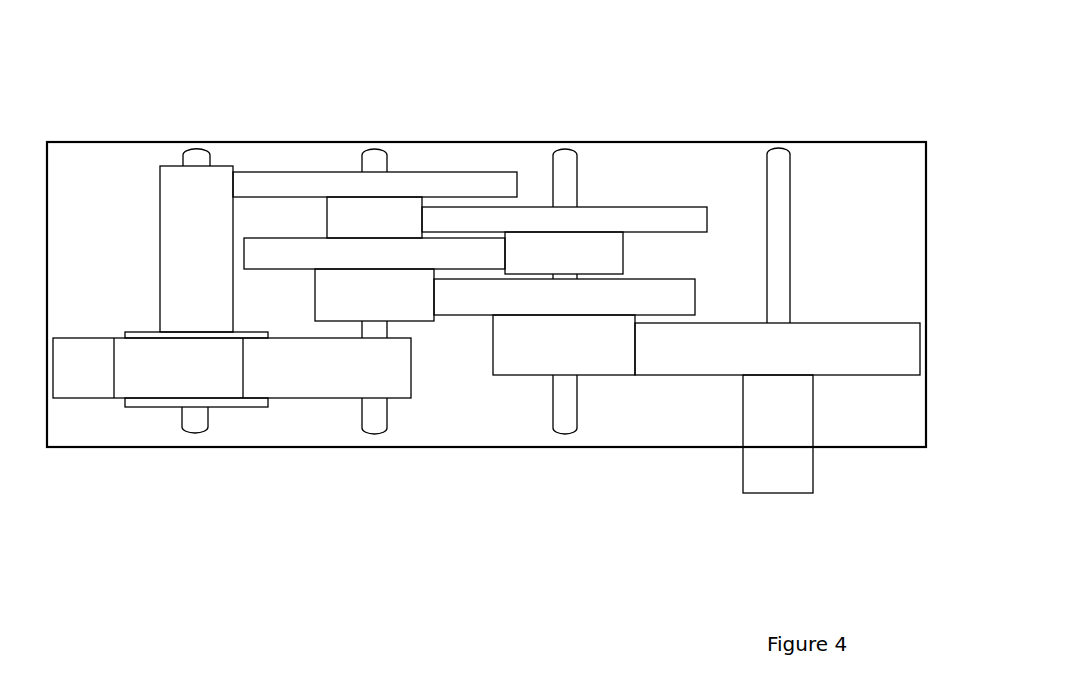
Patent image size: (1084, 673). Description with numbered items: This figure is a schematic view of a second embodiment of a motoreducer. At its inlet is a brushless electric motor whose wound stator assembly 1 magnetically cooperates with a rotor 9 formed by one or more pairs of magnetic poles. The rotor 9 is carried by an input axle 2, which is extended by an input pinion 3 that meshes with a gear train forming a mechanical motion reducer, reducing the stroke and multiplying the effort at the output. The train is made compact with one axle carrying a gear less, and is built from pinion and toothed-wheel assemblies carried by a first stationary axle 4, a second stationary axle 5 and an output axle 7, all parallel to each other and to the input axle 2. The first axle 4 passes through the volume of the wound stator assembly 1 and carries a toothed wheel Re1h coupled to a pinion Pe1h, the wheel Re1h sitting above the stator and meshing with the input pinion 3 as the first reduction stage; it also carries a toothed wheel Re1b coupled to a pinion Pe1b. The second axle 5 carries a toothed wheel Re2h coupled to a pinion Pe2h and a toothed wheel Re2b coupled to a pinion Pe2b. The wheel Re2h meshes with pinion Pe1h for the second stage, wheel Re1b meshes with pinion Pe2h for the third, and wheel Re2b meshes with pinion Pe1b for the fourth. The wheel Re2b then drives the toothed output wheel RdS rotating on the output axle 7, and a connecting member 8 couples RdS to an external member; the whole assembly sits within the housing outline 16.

The wound stator assembly 1 is at (88, 373).
The input axle 2 is at (200, 428).
The input pinion 3 is at (185, 316).
The first stationary axle 4 is at (383, 157).
The second stationary axle 5 is at (568, 170).
The output axle 7 is at (785, 247).
The connecting member 8 is at (800, 484).
The rotor 9 is at (160, 407).
The enclosure frame 16 is at (344, 447).
The toothed wheel Re1h is at (300, 184).
The pinion Pe1h is at (352, 218).
The toothed wheel Re1b is at (394, 245).
The toothed wheel Re2h is at (488, 216).
The pinion Pe2h is at (545, 248).
The pinion Pe1b is at (405, 289).
The toothed wheel Re2b is at (518, 296).
The pinion Pe2b is at (552, 347).
The toothed output wheel RdS is at (806, 347).